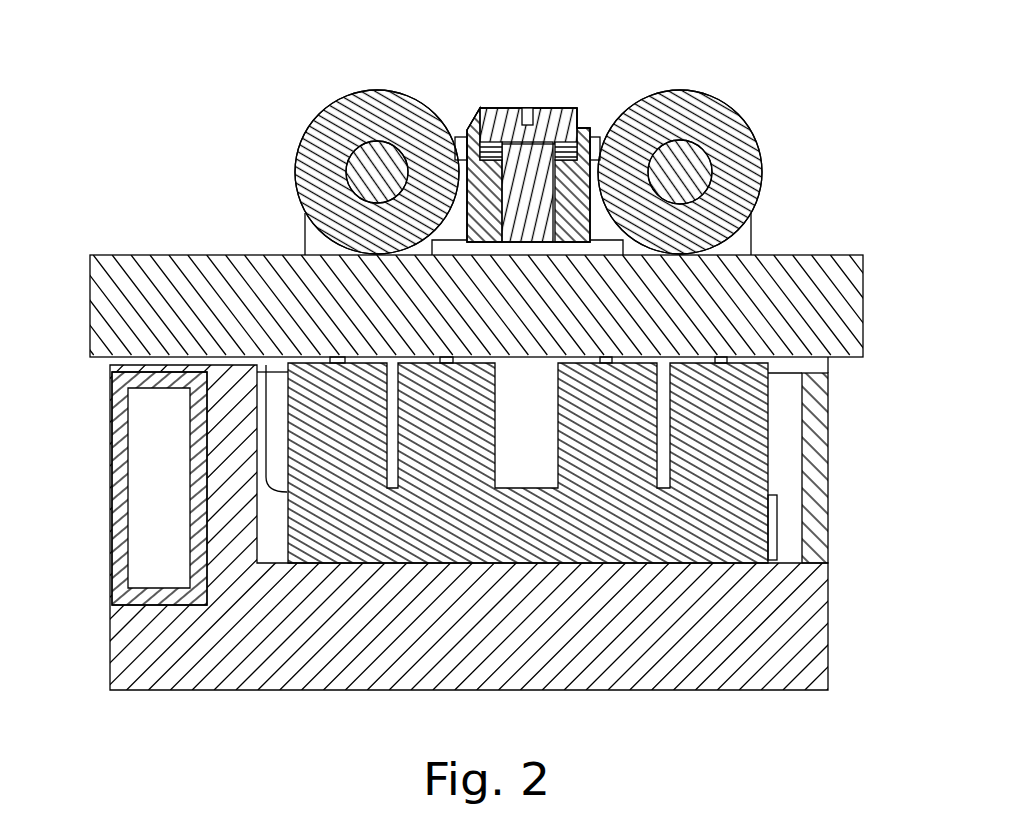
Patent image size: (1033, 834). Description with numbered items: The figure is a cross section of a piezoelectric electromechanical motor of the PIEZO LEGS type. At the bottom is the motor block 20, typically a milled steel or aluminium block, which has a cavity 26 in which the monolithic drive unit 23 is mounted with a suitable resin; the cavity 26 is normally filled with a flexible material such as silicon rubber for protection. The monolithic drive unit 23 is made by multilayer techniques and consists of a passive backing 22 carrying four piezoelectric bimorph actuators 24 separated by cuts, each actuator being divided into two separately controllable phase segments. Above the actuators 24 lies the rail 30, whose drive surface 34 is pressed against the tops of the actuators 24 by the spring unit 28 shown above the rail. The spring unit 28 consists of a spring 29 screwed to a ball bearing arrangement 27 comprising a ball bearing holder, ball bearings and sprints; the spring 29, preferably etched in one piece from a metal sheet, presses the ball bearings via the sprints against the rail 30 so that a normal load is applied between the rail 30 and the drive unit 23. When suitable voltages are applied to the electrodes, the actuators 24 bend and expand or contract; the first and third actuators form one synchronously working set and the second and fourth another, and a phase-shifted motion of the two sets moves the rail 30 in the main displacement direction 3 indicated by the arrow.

The main displacement direction 3 is at (210, 227).
The motor block 20 is at (790, 675).
The passive backing 22 is at (703, 548).
The monolithic drive unit 23 is at (548, 545).
The actuators 24 is at (335, 477).
The cavity 26 is at (782, 417).
The ball bearing arrangement 27 is at (303, 137).
The spring unit 28 is at (807, 142).
The spring 29 is at (490, 143).
The rail 30 is at (105, 298).
The drive surface 34 is at (105, 357).